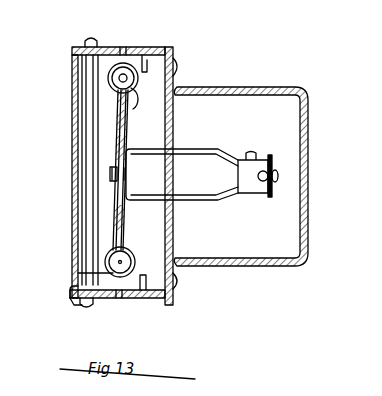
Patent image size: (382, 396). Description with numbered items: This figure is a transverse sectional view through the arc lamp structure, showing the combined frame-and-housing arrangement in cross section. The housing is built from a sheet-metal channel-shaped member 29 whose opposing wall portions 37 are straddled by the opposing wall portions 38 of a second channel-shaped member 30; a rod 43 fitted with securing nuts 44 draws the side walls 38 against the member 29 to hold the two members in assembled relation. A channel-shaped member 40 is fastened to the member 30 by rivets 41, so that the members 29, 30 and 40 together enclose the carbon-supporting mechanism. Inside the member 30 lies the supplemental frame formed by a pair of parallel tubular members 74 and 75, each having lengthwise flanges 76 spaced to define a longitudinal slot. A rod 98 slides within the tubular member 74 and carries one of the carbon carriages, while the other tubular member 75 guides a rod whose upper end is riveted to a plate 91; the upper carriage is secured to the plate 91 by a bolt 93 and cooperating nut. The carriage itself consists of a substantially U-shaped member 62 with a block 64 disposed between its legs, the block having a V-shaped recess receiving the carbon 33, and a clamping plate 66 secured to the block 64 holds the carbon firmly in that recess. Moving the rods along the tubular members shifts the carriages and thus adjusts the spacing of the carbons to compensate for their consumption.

The channel-shaped member 29 is at (70, 285).
The channel-shaped member 30 is at (173, 114).
The carbon 33 is at (266, 194).
The wall portion 37 is at (125, 55).
The wall portion 38 is at (147, 52).
The channel-shaped member 40 is at (315, 130).
The rivet 41 is at (178, 72).
The rod 43 is at (85, 85).
The securing nut 44 is at (88, 42).
The U-shaped member 62 is at (193, 200).
The block 64 is at (240, 176).
The clamping plate 66 is at (269, 195).
The tubular member 74 is at (134, 90).
The tubular member 75 is at (152, 243).
The flange 76 is at (128, 120).
The plate 91 is at (120, 207).
The bolt 93 is at (127, 173).
The rod 98 is at (112, 82).